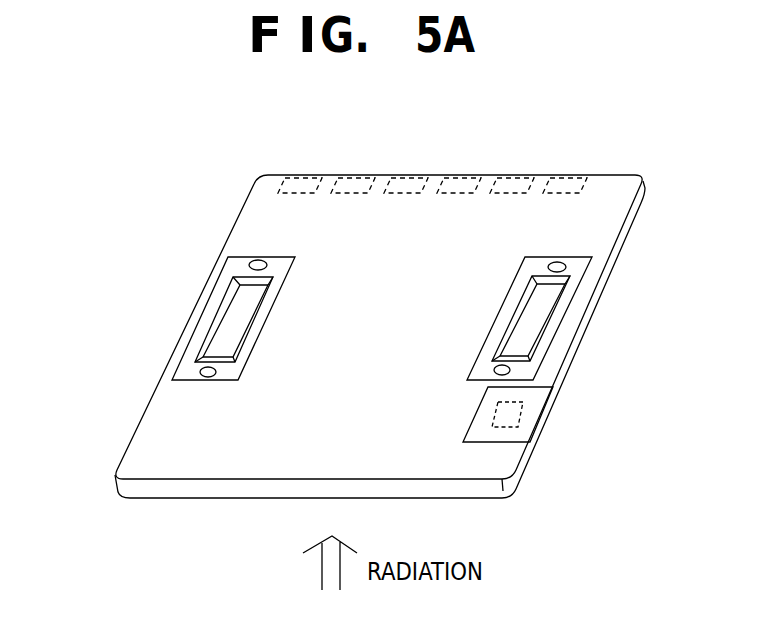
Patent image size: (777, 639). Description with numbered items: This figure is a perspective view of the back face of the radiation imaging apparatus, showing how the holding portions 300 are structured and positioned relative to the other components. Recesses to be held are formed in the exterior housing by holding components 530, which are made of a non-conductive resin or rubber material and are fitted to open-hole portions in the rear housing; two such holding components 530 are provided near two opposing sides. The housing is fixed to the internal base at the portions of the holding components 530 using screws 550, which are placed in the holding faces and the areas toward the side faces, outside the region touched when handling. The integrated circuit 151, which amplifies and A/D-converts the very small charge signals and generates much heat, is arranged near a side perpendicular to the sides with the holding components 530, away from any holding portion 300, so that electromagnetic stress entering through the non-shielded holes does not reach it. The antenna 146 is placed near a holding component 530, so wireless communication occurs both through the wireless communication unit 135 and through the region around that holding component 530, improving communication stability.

The holding portion 300 is at (230, 452).
The integrated circuit 151 is at (571, 176).
The holding component 530 is at (210, 317).
The screw 550 is at (259, 259).
The wireless communication unit 135 is at (530, 402).
The antenna 146 is at (523, 413).